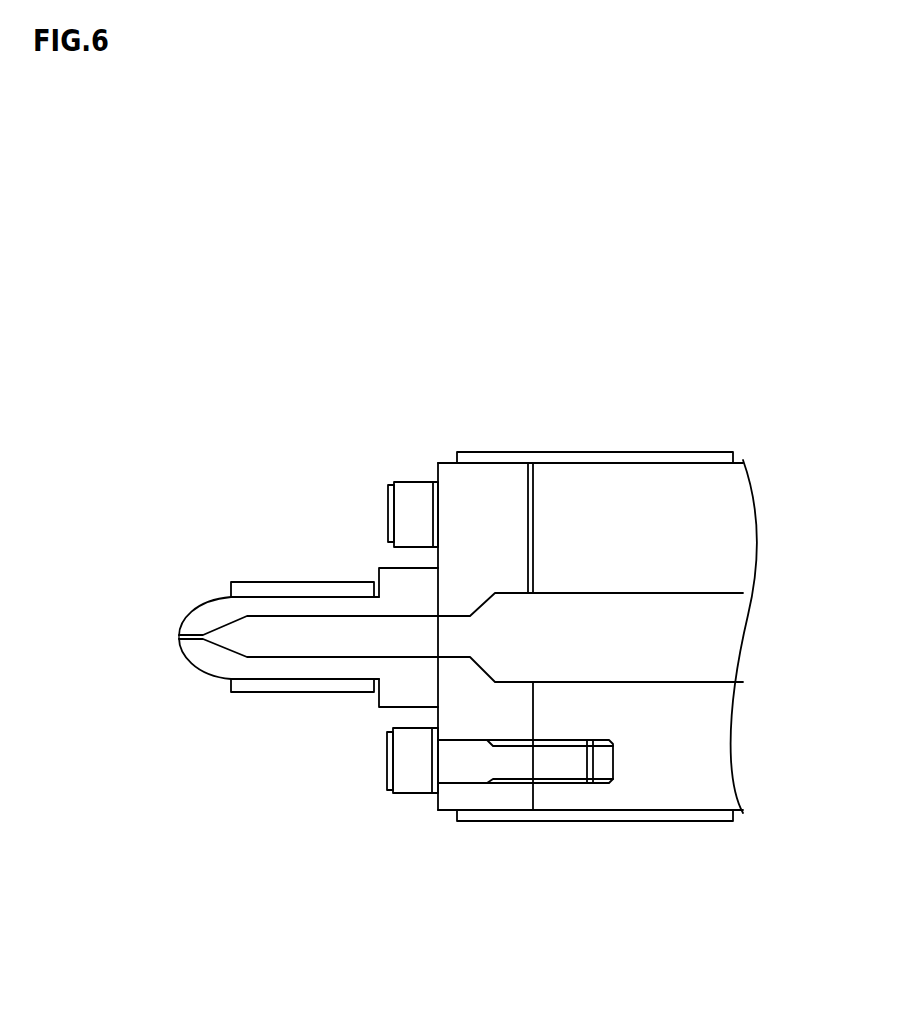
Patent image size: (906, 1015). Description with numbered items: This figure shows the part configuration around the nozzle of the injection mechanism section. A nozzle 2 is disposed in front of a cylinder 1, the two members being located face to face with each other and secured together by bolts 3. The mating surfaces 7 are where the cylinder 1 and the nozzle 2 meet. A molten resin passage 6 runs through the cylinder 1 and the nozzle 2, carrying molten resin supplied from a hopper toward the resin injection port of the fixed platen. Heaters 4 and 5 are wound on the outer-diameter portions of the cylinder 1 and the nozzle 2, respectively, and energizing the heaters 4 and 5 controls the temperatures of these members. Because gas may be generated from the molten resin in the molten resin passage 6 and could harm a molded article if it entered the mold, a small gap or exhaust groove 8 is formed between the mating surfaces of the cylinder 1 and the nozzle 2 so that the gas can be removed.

The cylinder 1 is at (663, 492).
The nozzle 2 is at (395, 580).
The bolts 3 is at (405, 758).
The heater 4 is at (485, 460).
The heater 5 is at (283, 582).
The molten resin passage 6 is at (718, 640).
The mating surfaces 7 is at (533, 717).
The exhaust groove 8 is at (533, 500).